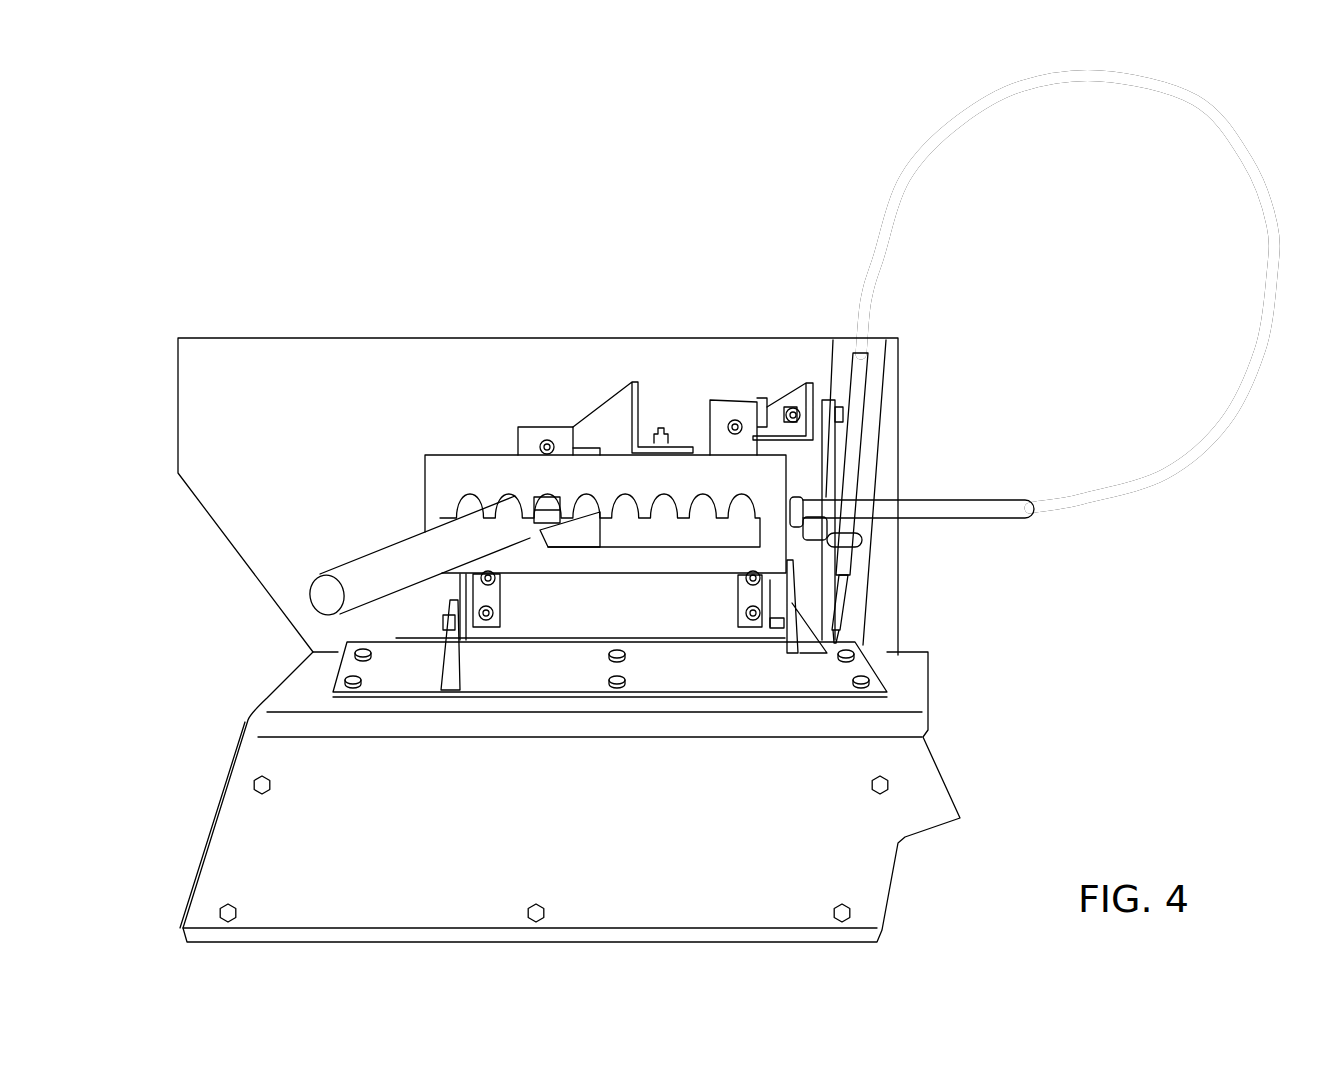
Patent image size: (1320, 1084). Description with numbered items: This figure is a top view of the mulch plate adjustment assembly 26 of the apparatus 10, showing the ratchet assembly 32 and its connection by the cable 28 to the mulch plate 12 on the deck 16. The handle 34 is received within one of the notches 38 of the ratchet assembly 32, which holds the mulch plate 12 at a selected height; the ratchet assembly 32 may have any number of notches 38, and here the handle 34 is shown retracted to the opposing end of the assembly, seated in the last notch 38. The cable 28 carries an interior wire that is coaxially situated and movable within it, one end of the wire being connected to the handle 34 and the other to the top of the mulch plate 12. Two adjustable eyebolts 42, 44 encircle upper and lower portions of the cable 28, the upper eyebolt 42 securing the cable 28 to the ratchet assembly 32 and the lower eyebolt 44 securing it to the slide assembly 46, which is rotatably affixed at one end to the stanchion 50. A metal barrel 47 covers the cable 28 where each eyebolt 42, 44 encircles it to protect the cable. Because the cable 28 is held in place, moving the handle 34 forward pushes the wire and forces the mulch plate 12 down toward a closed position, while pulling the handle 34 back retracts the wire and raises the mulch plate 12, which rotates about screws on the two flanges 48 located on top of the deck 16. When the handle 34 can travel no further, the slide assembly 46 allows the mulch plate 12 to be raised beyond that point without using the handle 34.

The apparatus 10 is at (1098, 665).
The mulch plate 12 is at (285, 848).
The deck 16 is at (532, 357).
The mulch plate adjustment assembly 26 is at (462, 368).
The cable 28 is at (1003, 93).
The ratchet assembly 32 is at (692, 468).
The handle 34 is at (353, 568).
The notch 38 is at (470, 497).
The adjustable eyebolt 42 is at (810, 490).
The adjustable eyebolt 44 is at (862, 540).
The slide assembly 46 is at (833, 395).
The metal barrel 47 is at (857, 427).
The flange 48 is at (498, 590).
The stanchion 50 is at (727, 400).